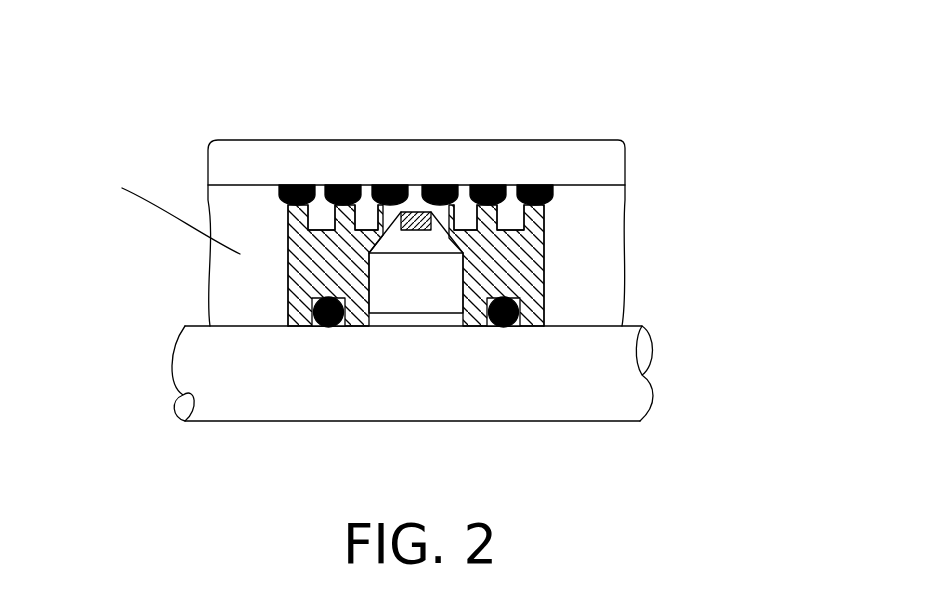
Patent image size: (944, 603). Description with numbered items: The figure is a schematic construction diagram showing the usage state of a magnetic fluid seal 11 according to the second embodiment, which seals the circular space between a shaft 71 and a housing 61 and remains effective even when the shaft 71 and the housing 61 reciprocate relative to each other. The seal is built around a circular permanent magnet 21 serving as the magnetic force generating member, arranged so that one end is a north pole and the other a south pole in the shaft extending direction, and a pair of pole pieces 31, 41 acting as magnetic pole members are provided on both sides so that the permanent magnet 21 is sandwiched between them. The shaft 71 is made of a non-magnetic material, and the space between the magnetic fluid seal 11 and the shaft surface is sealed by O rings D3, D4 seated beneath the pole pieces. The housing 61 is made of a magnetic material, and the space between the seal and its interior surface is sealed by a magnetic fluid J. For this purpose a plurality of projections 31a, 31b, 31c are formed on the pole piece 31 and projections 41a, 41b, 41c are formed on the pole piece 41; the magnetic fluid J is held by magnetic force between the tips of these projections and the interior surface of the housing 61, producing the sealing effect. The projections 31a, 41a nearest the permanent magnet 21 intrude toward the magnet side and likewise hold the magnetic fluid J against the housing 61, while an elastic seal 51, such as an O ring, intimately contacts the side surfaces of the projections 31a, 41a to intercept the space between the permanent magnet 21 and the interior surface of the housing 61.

The magnetic fluid seal 11 is at (248, 257).
The permanent magnet 21 is at (414, 314).
The pole piece 31 is at (288, 282).
The projection 31a is at (364, 210).
The projection 31b is at (322, 212).
The projection 31c is at (289, 204).
The pole piece 41 is at (548, 258).
The projection 41a is at (468, 212).
The projection 41b is at (512, 212).
The projection 41c is at (546, 217).
The elastic seal 51 is at (418, 212).
The housing 61 is at (217, 164).
The shaft 71 is at (647, 400).
The O ring D3 is at (327, 327).
The O ring D4 is at (518, 302).
The magnetic fluid J is at (297, 186).